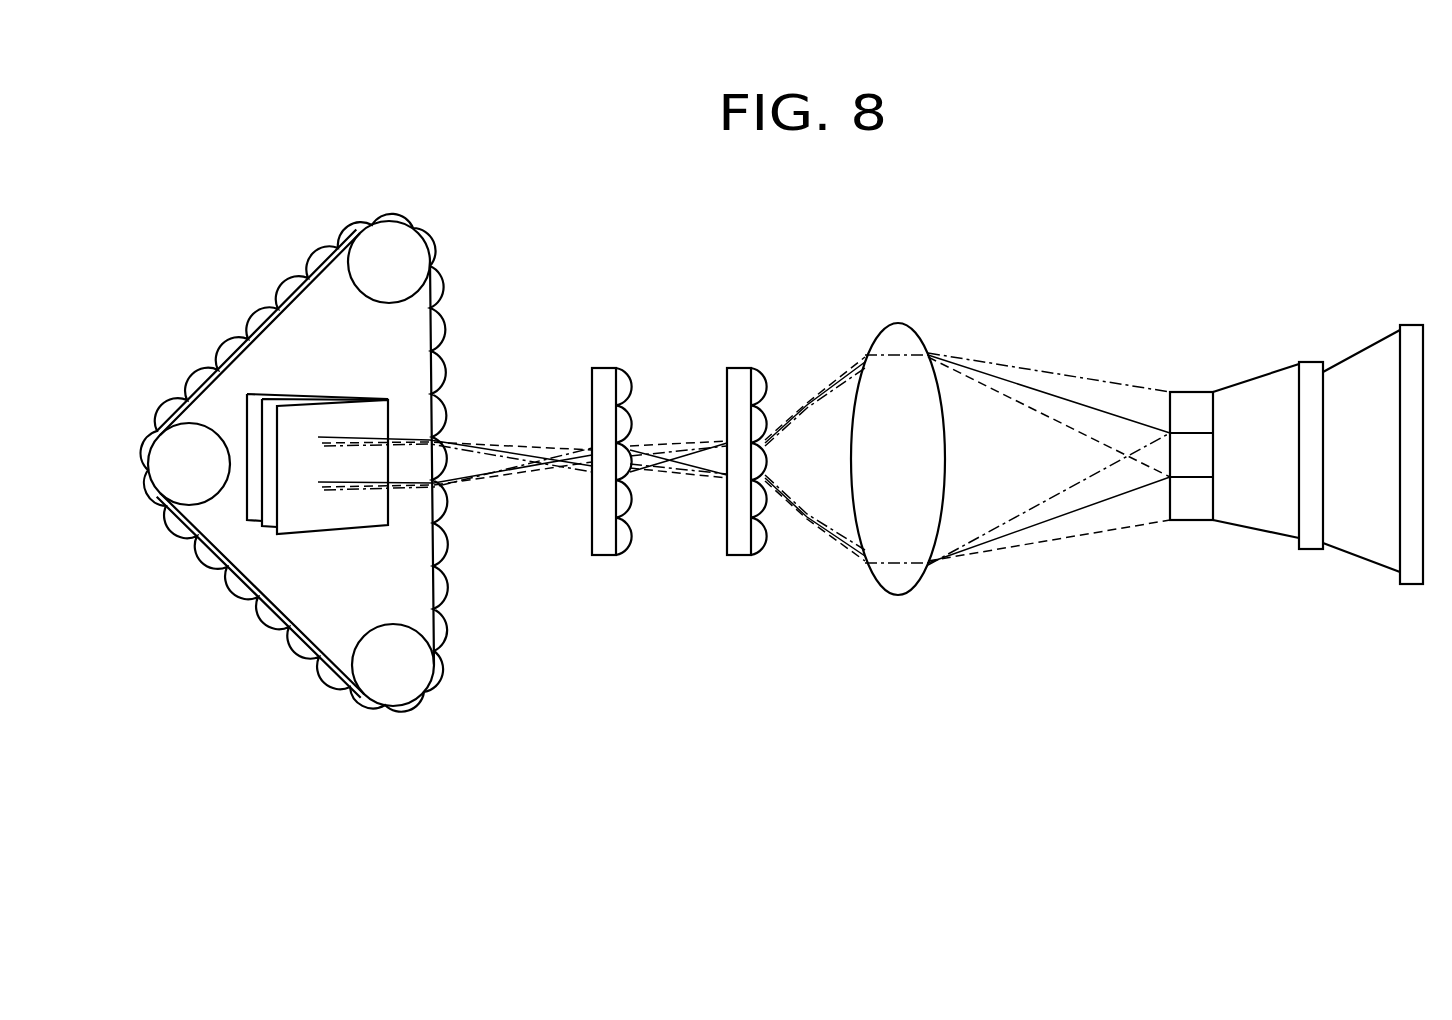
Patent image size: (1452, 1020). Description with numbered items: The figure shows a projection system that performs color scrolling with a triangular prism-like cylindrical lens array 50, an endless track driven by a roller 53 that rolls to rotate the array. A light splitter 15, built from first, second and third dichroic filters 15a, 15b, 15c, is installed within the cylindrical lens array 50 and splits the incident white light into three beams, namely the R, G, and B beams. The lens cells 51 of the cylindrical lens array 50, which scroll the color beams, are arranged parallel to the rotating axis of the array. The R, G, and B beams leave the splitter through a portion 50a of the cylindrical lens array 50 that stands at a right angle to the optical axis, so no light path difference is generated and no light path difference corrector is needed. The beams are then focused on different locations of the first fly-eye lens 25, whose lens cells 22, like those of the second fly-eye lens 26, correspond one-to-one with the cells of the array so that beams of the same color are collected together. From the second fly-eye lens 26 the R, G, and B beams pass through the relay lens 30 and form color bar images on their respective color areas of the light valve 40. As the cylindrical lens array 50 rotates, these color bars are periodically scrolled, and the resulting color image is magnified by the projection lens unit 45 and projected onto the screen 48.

The cylindrical lens array 50 is at (224, 248).
The portion of the cylindrical lens array 50a is at (452, 695).
The lens cells 51 is at (210, 368).
The roller 53 is at (407, 692).
The light splitter 15 is at (284, 584).
The first dichroic filter 15a is at (307, 525).
The second dichroic filter 15b is at (267, 525).
The third dichroic filter 15c is at (257, 510).
The lens cells 22 is at (675, 458).
The first fly-eye lens 25 is at (603, 378).
The second fly-eye lens 26 is at (740, 378).
The relay lens 30 is at (897, 326).
The light valve 40 is at (1196, 395).
The projection lens unit 45 is at (1313, 368).
The screen 48 is at (1413, 330).
The R beam R is at (484, 450).
The G beam G is at (500, 447).
The B beam B is at (523, 445).